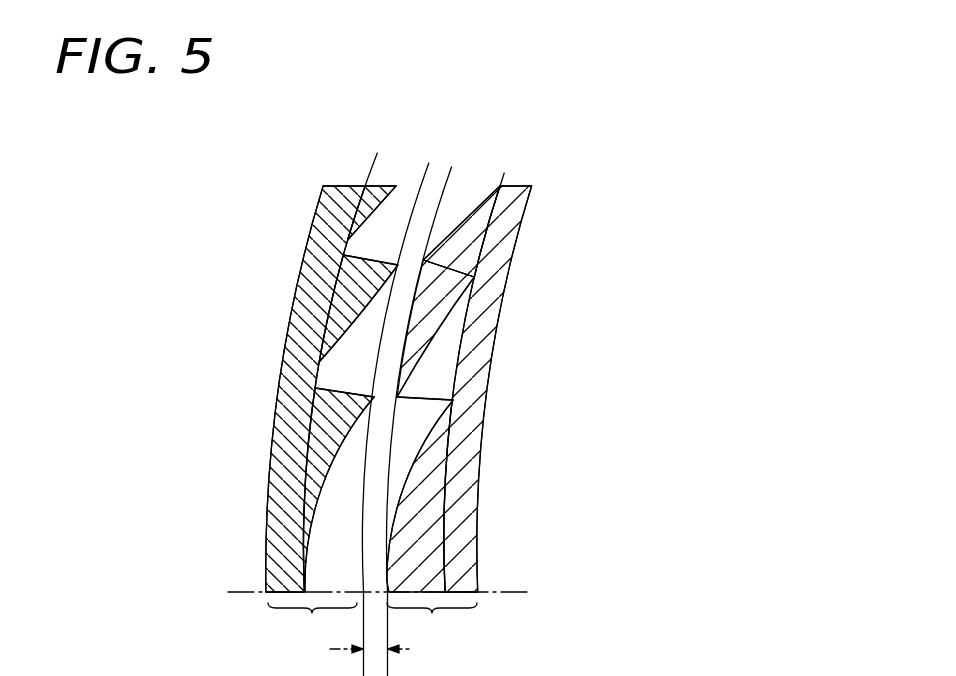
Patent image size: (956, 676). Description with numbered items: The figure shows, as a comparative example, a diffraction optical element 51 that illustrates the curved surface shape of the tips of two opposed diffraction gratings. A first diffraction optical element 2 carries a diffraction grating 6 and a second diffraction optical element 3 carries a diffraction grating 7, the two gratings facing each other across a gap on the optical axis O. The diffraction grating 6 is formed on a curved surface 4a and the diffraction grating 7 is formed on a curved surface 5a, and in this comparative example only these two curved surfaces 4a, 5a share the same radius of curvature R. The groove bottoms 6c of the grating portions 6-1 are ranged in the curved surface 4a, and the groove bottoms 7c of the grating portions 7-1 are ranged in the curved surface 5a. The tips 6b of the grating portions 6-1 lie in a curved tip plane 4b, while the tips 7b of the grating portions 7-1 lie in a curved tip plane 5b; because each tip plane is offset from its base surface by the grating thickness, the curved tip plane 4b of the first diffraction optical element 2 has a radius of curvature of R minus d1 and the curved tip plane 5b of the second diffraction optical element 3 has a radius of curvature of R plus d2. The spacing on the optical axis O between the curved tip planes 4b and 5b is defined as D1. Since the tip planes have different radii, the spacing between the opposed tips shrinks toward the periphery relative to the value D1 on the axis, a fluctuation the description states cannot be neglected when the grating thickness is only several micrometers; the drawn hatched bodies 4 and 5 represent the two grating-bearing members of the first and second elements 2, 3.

The diffraction optical element 51 is at (527, 77).
The first diffraction optical element 2 is at (312, 623).
The second diffraction optical element 3 is at (432, 623).
The first blade 4 is at (306, 266).
The curved surface 4a is at (370, 175).
The curved tip plane 4b is at (427, 175).
The second blade 5 is at (500, 247).
The curved surface 5a is at (505, 176).
The curved tip plane 5b is at (453, 170).
The diffraction grating 6 is at (307, 490).
The grating portion 6-1 is at (348, 298).
The tip 6b is at (374, 397).
The groove bottom 6c is at (347, 247).
The diffraction grating 7 is at (423, 492).
The grating portion 7-1 is at (447, 350).
The tip 7b is at (400, 400).
The groove bottom 7c is at (474, 279).
The spacing D1 is at (371, 660).
The optical axis O is at (389, 592).